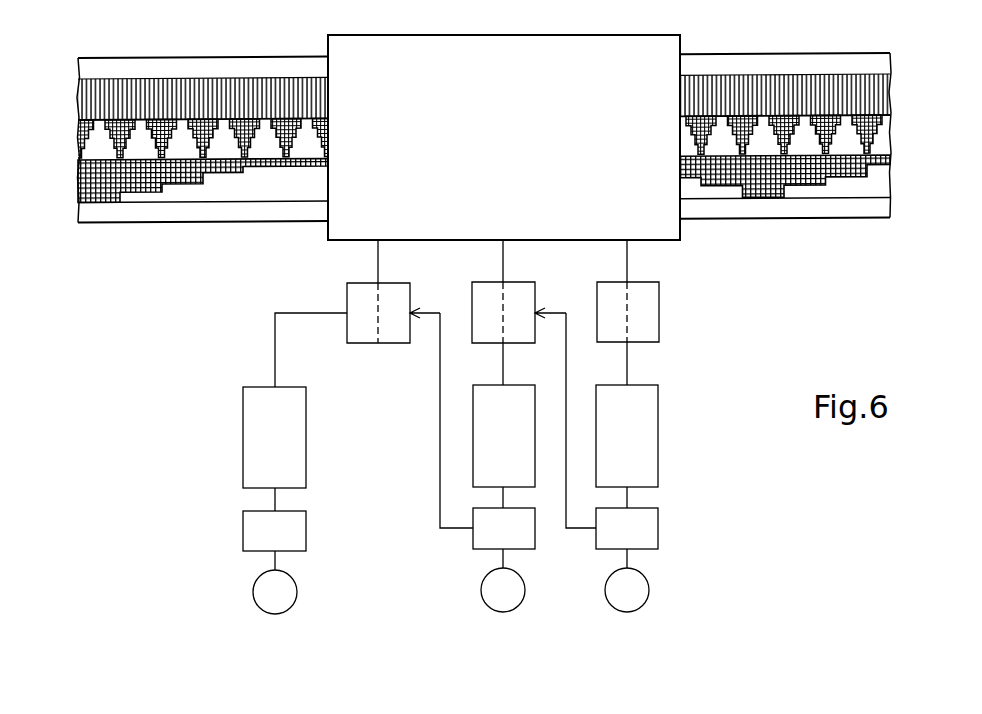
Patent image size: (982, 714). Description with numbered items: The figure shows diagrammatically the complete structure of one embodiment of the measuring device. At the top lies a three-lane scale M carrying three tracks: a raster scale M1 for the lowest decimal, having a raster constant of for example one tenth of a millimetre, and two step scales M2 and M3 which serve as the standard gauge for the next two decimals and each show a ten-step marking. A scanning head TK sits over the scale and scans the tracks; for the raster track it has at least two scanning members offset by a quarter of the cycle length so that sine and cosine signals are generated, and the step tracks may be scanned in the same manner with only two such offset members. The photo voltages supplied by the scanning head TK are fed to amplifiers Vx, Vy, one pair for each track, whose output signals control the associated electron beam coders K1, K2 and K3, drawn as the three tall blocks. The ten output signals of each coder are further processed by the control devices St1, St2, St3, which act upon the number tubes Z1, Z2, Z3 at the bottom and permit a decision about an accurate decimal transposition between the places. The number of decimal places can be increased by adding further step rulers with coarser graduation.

The three-lane scale M is at (63, 226).
The raster scale M1 is at (868, 90).
The step scale M2 is at (882, 136).
The step scale M3 is at (875, 181).
The scanning head TK is at (645, 198).
The amplifier Vx is at (607, 291).
The amplifier Vy is at (655, 272).
The electron beam coder K1 is at (652, 393).
The electron beam coder K2 is at (517, 402).
The electron beam coder K3 is at (292, 401).
The control device St1 is at (647, 538).
The control device St2 is at (473, 540).
The control device St3 is at (292, 537).
The number tube Z1 is at (640, 593).
The number tube Z2 is at (482, 600).
The number tube Z3 is at (270, 593).